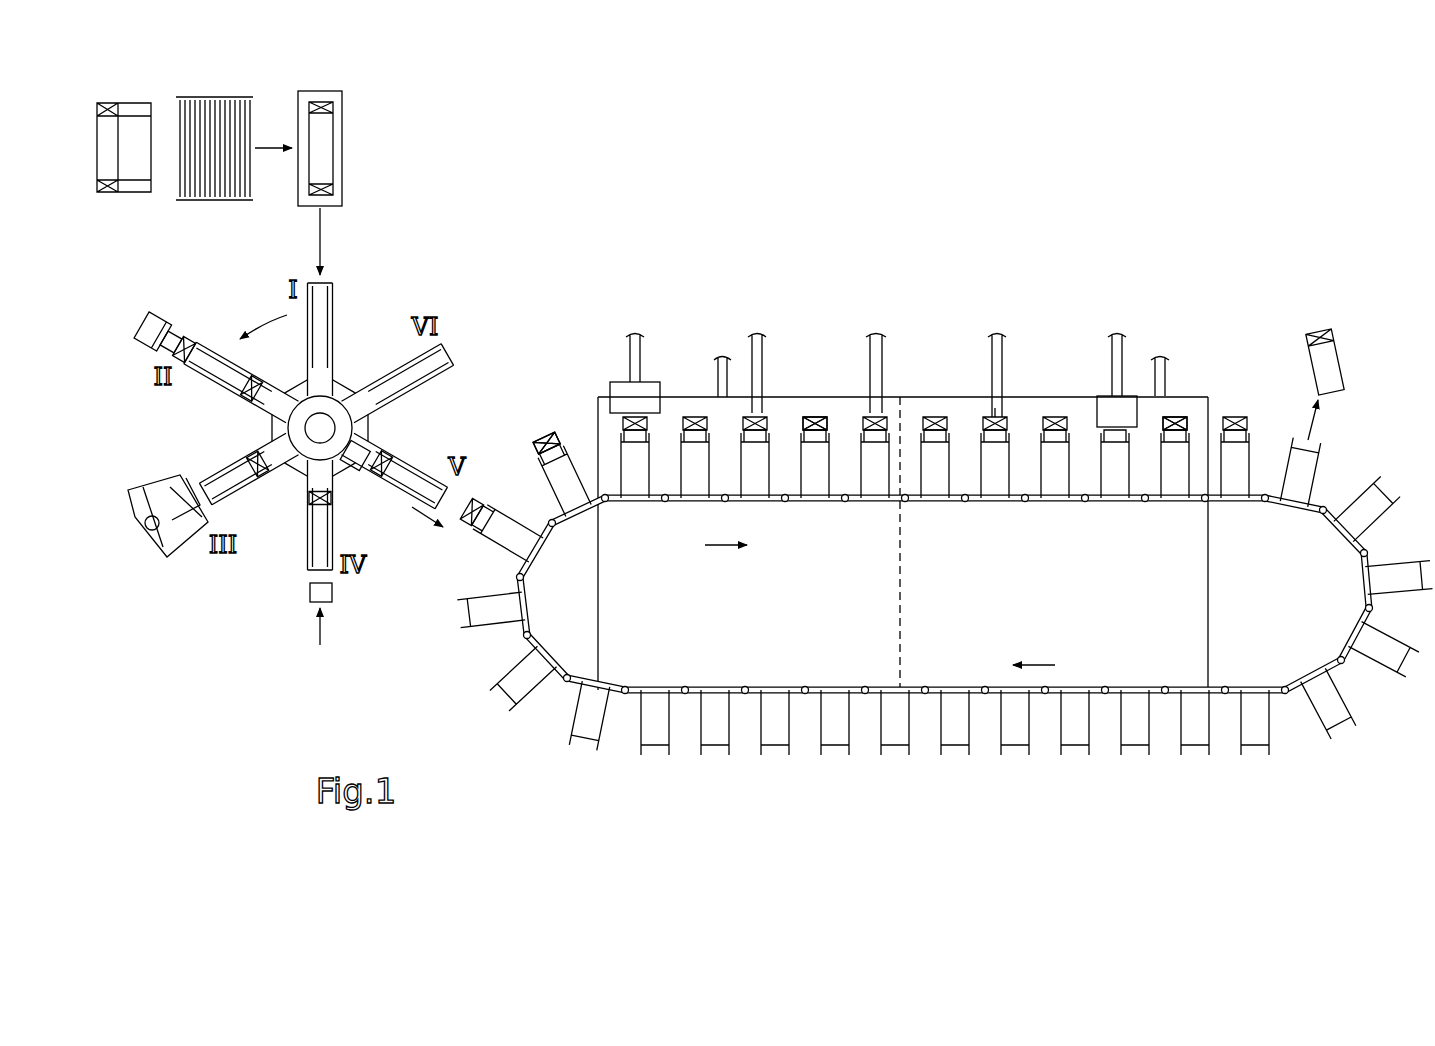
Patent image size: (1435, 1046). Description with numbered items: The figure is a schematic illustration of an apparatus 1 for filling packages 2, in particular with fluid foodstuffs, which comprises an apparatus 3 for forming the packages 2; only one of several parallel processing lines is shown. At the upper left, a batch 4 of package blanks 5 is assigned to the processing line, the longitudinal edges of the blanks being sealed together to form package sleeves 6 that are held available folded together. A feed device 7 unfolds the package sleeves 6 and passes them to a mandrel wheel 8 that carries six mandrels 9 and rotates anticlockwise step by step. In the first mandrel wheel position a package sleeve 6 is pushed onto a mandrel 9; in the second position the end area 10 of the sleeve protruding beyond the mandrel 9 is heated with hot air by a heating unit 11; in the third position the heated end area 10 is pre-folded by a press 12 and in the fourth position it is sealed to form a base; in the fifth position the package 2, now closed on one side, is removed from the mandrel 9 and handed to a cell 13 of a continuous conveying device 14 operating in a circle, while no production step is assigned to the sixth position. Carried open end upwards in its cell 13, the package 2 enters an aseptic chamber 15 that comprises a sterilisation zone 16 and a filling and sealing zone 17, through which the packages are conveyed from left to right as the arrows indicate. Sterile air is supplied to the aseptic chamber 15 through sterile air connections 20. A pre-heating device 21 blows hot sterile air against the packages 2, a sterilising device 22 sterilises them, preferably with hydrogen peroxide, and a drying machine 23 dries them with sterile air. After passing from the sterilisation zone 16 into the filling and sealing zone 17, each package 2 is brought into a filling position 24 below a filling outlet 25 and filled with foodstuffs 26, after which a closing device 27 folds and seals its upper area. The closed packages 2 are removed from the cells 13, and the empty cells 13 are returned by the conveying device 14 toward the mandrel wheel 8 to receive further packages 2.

The apparatus for filling packages 1 is at (613, 170).
The package 2 is at (398, 473).
The apparatus for forming packages 3 is at (232, 730).
The batch of package blanks 4 is at (197, 213).
The package blank 5 is at (132, 165).
The package sleeve 6 is at (322, 158).
The feed device 7 is at (345, 122).
The mandrel wheel 8 is at (237, 590).
The mandrel 9 is at (322, 335).
The end area 10 is at (185, 335).
The heating unit 11 is at (143, 328).
The press 12 is at (165, 545).
The cell 13 is at (540, 480).
The conveying device 14 is at (813, 505).
The aseptic chamber 15 is at (670, 300).
The sterilisation zone 16 is at (787, 408).
The filling and sealing zone 17 is at (1025, 435).
The sterile air connection 20 is at (722, 350).
The pre-heating device 21 is at (620, 388).
The sterilising device 22 is at (757, 330).
The drying machine 23 is at (876, 330).
The filling position 24 is at (997, 488).
The filling outlet 25 is at (993, 408).
The foodstuffs 26 is at (996, 335).
The closing device 27 is at (1115, 335).